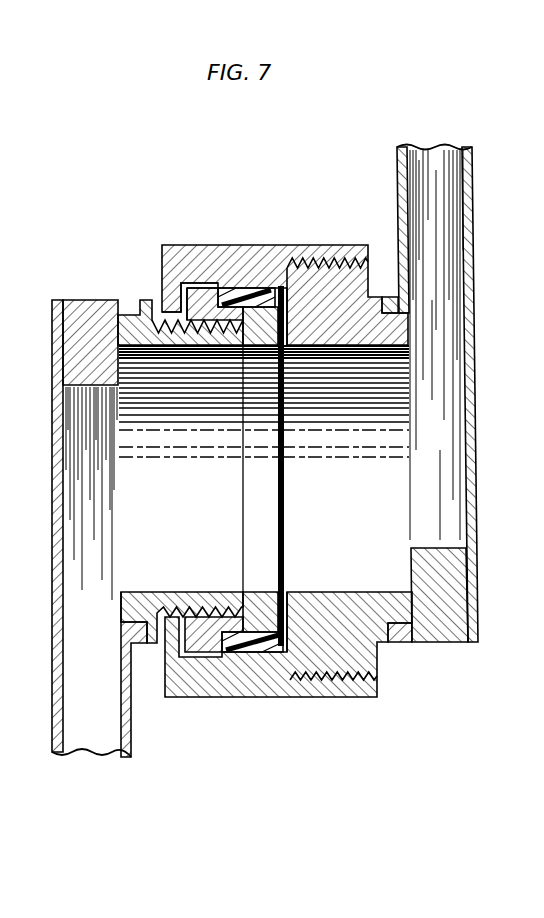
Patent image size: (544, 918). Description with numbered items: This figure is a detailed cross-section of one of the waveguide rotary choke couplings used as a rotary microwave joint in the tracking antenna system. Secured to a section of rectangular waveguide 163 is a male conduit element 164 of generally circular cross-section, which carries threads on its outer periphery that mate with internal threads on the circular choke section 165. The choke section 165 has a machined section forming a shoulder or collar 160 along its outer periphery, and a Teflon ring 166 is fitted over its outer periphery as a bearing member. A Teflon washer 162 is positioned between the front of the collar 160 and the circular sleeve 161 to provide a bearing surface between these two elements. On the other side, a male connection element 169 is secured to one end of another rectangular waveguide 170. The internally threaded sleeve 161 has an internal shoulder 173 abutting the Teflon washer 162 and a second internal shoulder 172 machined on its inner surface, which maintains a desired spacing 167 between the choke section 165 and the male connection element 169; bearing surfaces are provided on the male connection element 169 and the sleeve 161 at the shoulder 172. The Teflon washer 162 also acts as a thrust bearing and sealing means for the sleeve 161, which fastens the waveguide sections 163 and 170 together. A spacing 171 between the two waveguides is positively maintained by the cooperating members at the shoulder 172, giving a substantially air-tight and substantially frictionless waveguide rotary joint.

The shoulder or collar 160 is at (203, 296).
The circular sleeve 161 is at (244, 243).
The Teflon washer 162 is at (165, 300).
The rectangular waveguide 163 is at (70, 305).
The male conduit element 164 is at (121, 310).
The choke section 165 is at (265, 324).
The Teflon ring 166 is at (232, 302).
The spacing 167 is at (308, 297).
The male connection element 169 is at (338, 272).
The rectangular waveguide 170 is at (458, 604).
The spacing 171 is at (200, 283).
The internal shoulder 172 is at (284, 289).
The internal shoulder 173 is at (175, 284).